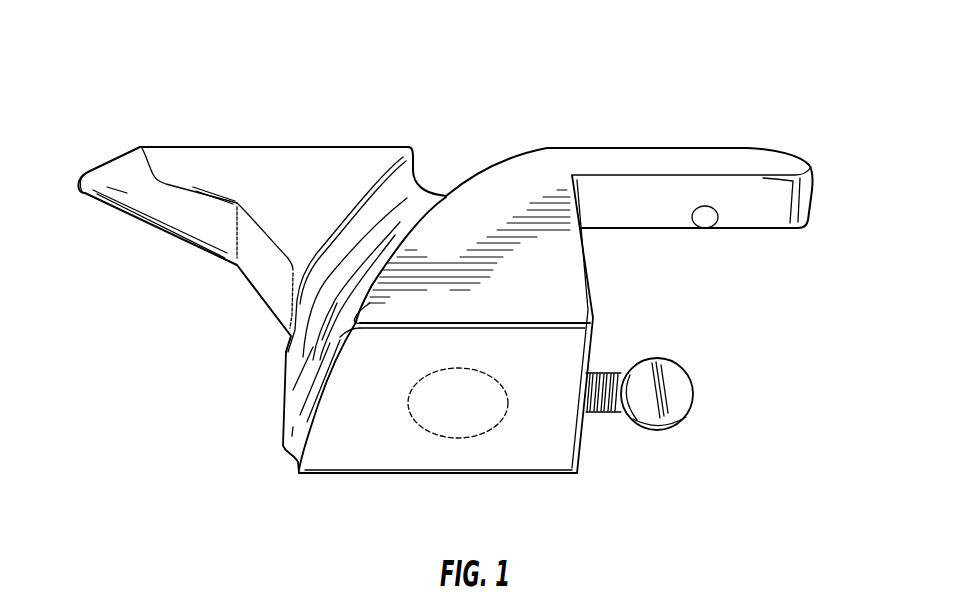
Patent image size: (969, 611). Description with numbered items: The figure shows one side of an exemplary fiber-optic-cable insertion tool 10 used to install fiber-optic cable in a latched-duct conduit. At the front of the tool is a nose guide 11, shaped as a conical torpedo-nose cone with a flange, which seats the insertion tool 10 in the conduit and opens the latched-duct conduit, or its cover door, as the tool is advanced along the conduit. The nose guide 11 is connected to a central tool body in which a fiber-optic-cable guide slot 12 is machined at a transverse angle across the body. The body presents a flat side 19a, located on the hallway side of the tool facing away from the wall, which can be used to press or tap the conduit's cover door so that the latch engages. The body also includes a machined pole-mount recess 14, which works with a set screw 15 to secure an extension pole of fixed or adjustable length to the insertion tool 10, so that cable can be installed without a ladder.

The fiber-optic-cable insertion tool 10 is at (755, 97).
The nose guide 11 is at (107, 162).
The fiber-optic-cable guide slot 12 is at (287, 350).
The pole-mount recess 14 is at (448, 440).
The set screw 15 is at (683, 397).
The flat side 19a is at (550, 427).